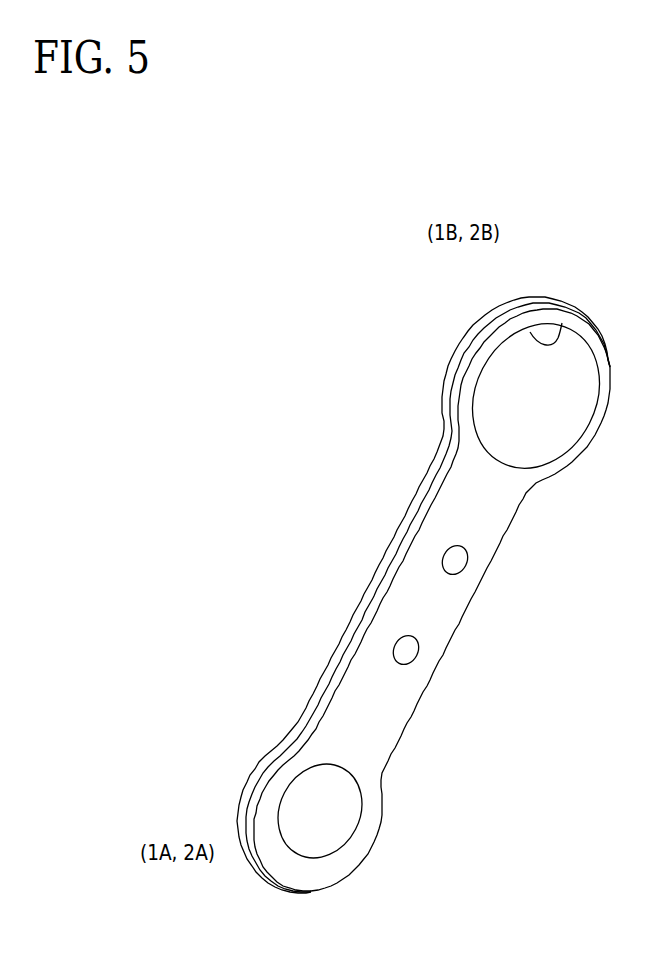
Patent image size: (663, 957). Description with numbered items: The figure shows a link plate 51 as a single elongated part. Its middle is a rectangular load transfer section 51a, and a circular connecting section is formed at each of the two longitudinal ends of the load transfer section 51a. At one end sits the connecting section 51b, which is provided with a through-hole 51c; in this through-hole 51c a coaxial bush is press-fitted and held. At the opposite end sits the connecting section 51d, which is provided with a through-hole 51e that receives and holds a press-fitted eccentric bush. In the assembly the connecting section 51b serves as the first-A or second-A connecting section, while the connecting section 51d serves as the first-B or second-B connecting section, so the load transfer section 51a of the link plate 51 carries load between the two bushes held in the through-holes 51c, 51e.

The link plate 51 is at (545, 620).
The load transfer section 51a is at (429, 689).
The connecting section 51b is at (244, 834).
The through-hole 51c is at (286, 812).
The connecting section 51d is at (497, 309).
The through-hole 51e is at (558, 341).